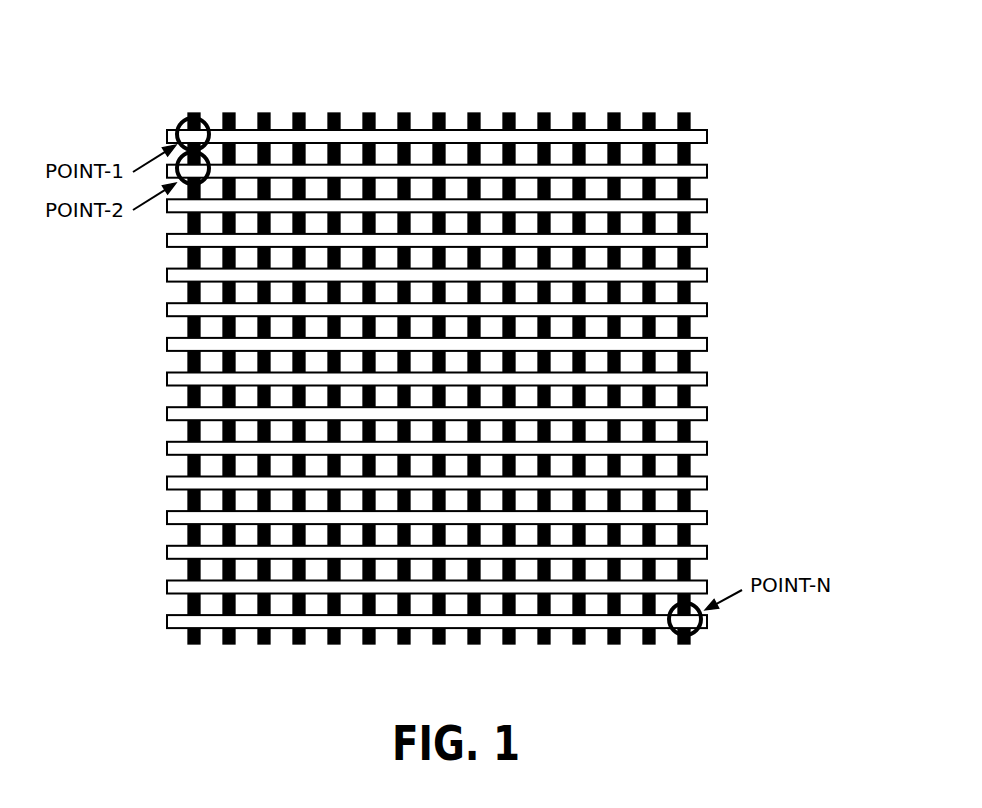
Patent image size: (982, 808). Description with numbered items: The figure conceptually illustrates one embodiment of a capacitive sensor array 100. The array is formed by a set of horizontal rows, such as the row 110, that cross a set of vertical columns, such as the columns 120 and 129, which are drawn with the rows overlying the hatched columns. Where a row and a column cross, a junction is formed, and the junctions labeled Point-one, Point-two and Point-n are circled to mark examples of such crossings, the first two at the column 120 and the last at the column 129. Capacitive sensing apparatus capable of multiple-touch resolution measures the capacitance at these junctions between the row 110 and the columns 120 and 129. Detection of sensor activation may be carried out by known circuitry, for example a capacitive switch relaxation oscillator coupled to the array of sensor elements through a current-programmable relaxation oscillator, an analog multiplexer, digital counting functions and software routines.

The capacitive sensor array 100 is at (523, 326).
The row 110 is at (726, 133).
The column 120 is at (203, 103).
The column 129 is at (692, 102).